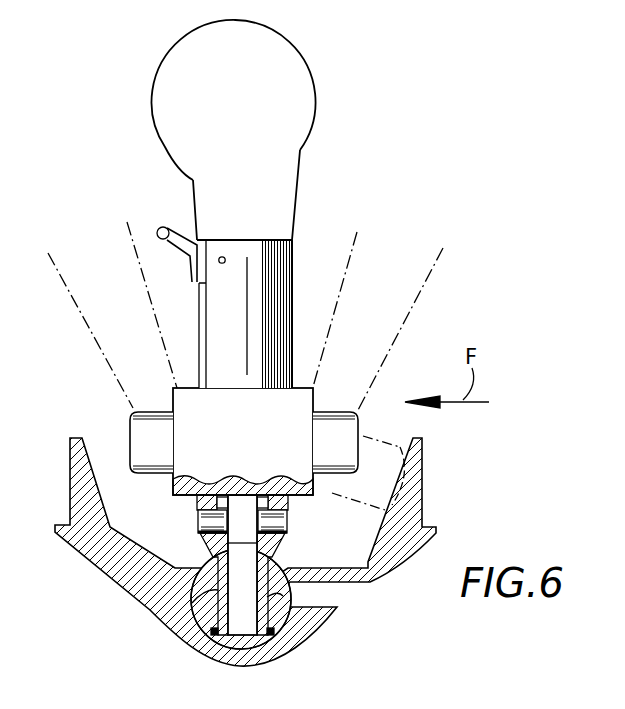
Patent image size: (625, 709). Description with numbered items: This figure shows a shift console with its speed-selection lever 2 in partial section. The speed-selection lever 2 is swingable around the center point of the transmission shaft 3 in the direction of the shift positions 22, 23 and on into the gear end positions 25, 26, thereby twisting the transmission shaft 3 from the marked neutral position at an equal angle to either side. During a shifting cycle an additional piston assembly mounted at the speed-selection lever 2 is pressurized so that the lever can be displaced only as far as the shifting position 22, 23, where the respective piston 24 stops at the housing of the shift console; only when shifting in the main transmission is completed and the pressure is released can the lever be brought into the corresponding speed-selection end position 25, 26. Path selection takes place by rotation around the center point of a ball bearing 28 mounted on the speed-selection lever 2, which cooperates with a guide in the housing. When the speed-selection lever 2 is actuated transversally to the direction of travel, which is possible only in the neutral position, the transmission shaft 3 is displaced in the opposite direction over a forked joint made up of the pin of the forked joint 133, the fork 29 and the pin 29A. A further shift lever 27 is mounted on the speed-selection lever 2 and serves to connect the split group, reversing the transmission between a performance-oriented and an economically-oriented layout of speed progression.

The speed-selection lever 2 is at (292, 97).
The transmission shaft 3 is at (282, 628).
The shifting position 22 is at (130, 240).
The shifting position 23 is at (352, 250).
The piston 24 is at (130, 422).
The speed-selection end position 25 is at (52, 256).
The speed-selection end position 26 is at (428, 277).
The shift lever 27 is at (165, 228).
The ball bearing 28 is at (222, 441).
The fork 29 is at (200, 502).
The pin 29A is at (288, 518).
The pin of forked joint 133 is at (170, 622).